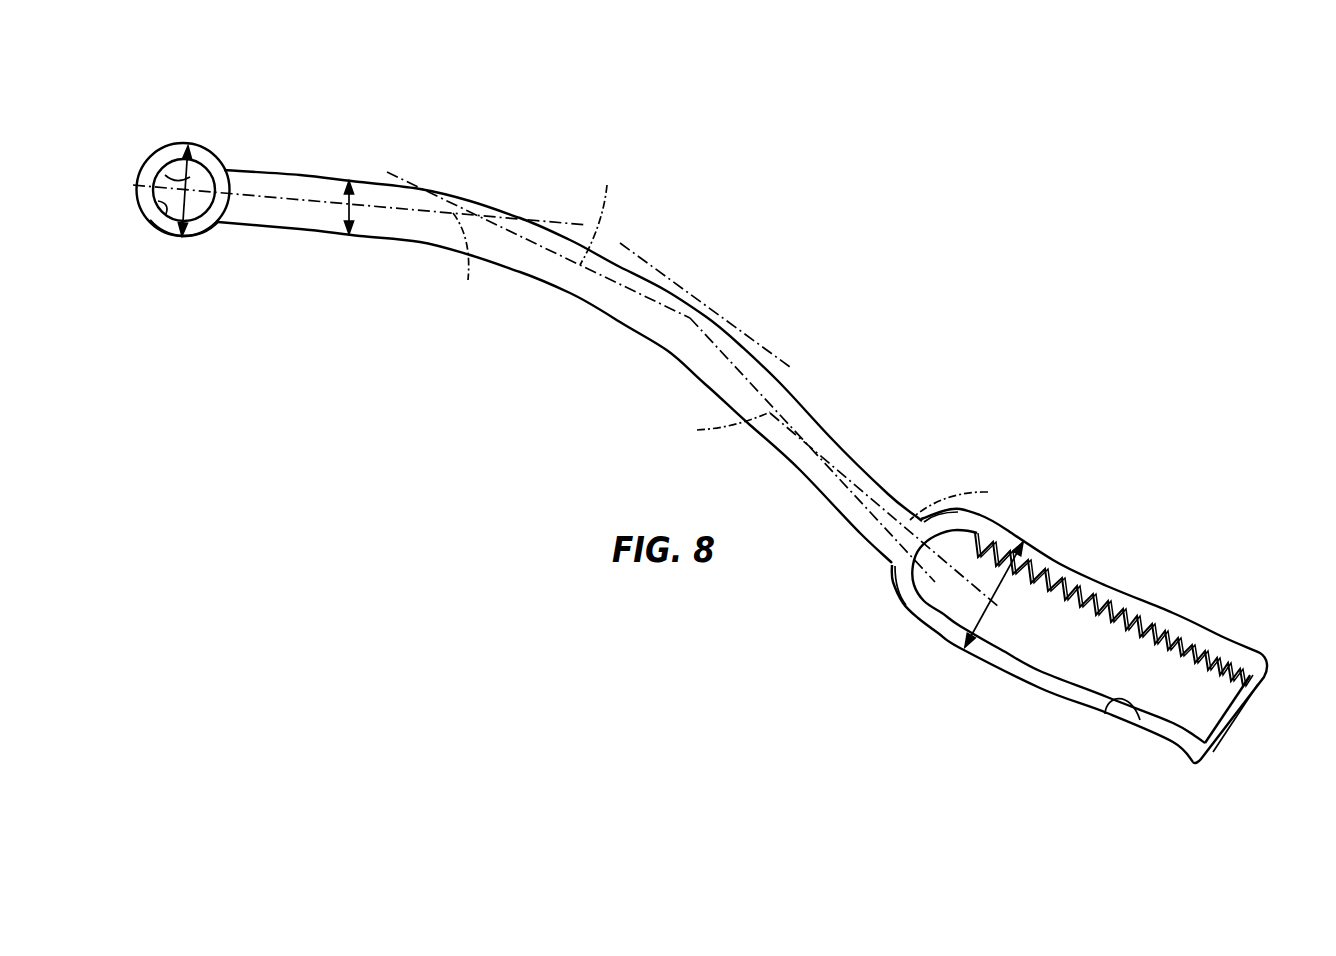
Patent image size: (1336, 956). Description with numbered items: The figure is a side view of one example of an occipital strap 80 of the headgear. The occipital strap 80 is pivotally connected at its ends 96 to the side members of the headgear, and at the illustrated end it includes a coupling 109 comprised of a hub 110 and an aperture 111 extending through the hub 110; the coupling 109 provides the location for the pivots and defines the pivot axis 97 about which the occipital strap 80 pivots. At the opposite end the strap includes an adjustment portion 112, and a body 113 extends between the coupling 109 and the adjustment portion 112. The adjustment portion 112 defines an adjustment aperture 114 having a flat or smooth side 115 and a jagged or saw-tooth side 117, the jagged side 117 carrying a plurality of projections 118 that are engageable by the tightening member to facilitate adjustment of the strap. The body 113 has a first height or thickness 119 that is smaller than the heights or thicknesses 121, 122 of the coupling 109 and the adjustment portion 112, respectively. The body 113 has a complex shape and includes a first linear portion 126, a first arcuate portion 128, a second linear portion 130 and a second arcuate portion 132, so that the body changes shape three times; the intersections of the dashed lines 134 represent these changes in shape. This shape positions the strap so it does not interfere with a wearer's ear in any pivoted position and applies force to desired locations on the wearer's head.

The occipital strap 80 is at (862, 258).
The ends 96 is at (167, 243).
The pivot axis 97 is at (193, 173).
The coupling 109 is at (172, 141).
The hub 110 is at (210, 224).
The aperture 111 is at (158, 226).
The adjustment portion 112 is at (1116, 587).
The body 113 is at (577, 297).
The adjustment aperture 114 is at (1078, 669).
The flat or smooth side 115 is at (1138, 718).
The jagged or saw-tooth side 117 is at (1213, 680).
The projections 118 is at (1108, 628).
The first height or thickness 119 is at (352, 212).
The height or thickness 121 is at (166, 176).
The height or thickness 122 is at (960, 617).
The first straight or linear portion 126 is at (297, 173).
The first curved or arcuate portion 128 is at (605, 250).
The second straight or linear portion 130 is at (832, 437).
The second curved or arcuate portion 132 is at (888, 494).
The dashed lines 134 is at (704, 338).